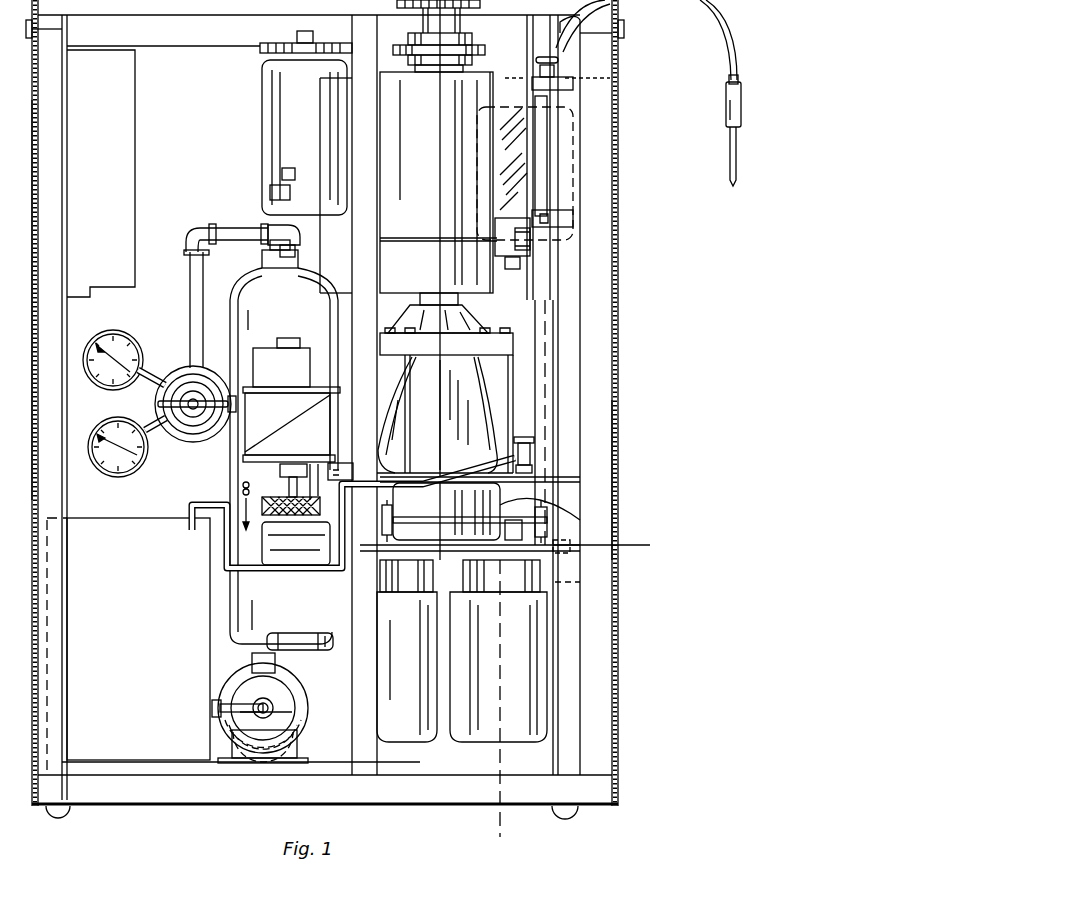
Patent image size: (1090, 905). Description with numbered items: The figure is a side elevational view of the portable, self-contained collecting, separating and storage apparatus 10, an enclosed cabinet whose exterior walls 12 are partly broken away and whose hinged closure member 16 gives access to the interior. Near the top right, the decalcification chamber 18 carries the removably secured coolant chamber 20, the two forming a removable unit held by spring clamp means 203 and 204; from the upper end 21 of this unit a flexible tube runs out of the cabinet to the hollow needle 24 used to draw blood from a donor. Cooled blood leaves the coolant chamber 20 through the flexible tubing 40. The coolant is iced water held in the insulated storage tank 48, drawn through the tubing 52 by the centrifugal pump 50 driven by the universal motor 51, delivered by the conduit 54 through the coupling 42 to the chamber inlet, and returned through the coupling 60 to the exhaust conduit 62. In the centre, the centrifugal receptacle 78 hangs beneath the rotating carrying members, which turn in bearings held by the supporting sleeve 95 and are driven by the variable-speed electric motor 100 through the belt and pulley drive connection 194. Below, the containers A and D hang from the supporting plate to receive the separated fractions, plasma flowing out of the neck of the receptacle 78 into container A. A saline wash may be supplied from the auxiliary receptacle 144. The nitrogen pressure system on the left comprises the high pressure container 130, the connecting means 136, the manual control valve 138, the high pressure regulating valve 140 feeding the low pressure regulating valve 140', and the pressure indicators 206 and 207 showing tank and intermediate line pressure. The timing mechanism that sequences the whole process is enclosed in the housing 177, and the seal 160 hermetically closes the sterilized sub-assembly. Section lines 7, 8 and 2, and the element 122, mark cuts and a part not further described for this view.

The collecting, separating and storage apparatus 10 is at (621, 349).
The exterior walls 12 is at (33, 312).
The hinged closure member 16 is at (618, 482).
The decalcification chamber 18 is at (555, 171).
The coolant chamber 20 is at (543, 310).
The upper end of removable unit 21 is at (578, 30).
The hollow needle 24 is at (737, 162).
The flexible tubing 40 is at (545, 508).
The coupling 42 is at (527, 440).
The storage tank 48 is at (78, 622).
The centrifugal pump 50 is at (283, 698).
The universal motor 51 is at (300, 727).
The tubing 52 is at (245, 670).
The conduit 54 is at (300, 652).
The coupling 60 is at (493, 245).
The exhaust conduit 62 is at (400, 217).
The centrifugal receptacle 78 is at (468, 394).
The supporting sleeve 95 is at (481, 80).
The electric motor 100 is at (273, 135).
The reservoir box 122 is at (267, 582).
The container 130 is at (258, 297).
The connecting means 136 is at (190, 283).
The manual control valve 138 is at (263, 201).
The high pressure regulating valve 140 is at (194, 386).
The low pressure regulating valve 140' is at (261, 426).
The auxiliary receptacle 144 is at (573, 131).
The seal 160 is at (548, 505).
The housing 177 is at (100, 67).
The belt and pulley drive connection 194 is at (257, 44).
The spring clamp means 203 is at (570, 100).
The spring clamp means 204 is at (560, 221).
The pressure indicator 206 is at (128, 328).
The pressure indicator 207 is at (108, 470).
The section line 7- 7 is at (517, 92).
The section line 8- 8 is at (650, 565).
The section line 2- 2 is at (470, 837).
The container A is at (410, 733).
The container D is at (512, 733).